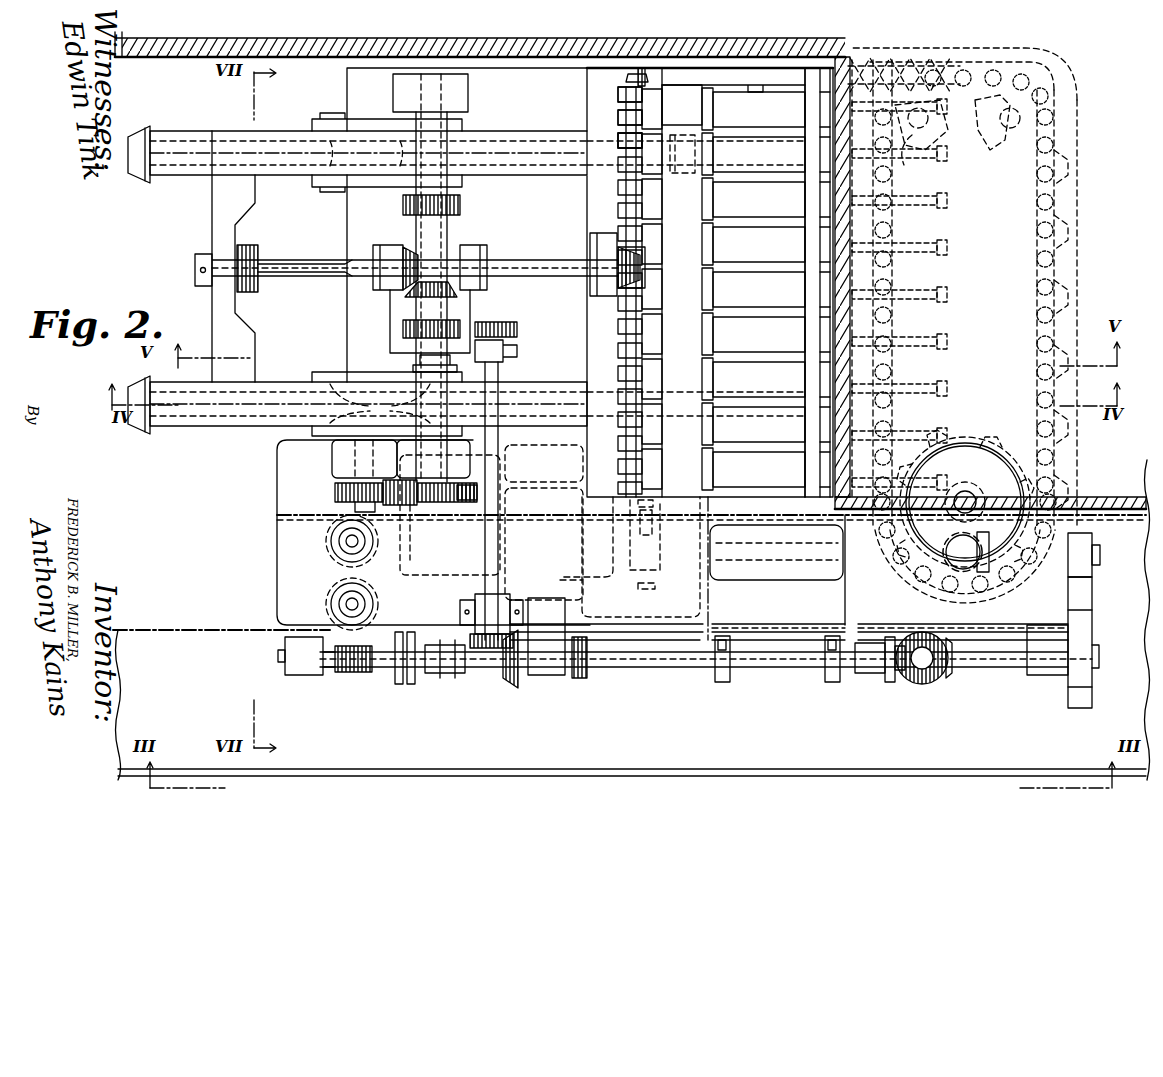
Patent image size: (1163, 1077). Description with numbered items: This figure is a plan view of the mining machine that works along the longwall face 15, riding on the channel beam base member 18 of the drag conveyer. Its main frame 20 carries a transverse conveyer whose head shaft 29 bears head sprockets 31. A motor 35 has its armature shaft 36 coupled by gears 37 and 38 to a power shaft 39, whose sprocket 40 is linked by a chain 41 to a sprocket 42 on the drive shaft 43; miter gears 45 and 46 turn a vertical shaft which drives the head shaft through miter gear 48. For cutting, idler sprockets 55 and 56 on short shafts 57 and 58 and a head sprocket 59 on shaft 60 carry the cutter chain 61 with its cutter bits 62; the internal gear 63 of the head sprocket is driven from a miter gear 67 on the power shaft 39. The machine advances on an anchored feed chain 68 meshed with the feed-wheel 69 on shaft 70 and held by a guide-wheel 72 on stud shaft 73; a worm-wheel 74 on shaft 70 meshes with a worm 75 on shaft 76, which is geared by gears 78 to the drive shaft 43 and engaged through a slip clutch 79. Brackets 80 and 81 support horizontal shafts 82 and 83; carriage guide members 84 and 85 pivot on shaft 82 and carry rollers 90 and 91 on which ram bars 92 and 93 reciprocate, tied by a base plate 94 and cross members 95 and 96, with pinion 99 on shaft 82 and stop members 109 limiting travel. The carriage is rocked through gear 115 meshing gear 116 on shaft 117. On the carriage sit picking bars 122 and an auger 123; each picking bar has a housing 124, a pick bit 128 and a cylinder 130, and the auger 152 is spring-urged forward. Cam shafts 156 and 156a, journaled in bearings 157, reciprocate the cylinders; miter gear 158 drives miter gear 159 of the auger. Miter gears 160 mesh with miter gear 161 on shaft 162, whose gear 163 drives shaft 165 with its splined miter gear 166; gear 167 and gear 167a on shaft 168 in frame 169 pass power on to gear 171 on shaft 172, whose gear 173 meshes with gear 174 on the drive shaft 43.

The longwall face 15 is at (1100, 505).
The channel beam base member 18 is at (195, 765).
The main frame 20 is at (277, 514).
The head shaft 29 is at (792, 663).
The head sprocket 31 is at (724, 684).
The motor 35 is at (594, 580).
The armature shaft 36 is at (632, 535).
The gear 37 is at (655, 505).
The gear 38 is at (652, 590).
The power shaft 39 is at (792, 558).
The sprocket 40 is at (1100, 555).
The chain 41 is at (1092, 596).
The sprocket 42 is at (1099, 663).
The drive shaft 43 is at (647, 667).
The miter gear 45 is at (950, 676).
The miter gear 46 is at (924, 684).
The miter gear 48 is at (897, 682).
The idler sprocket 55 is at (930, 120).
The idler sprocket 56 is at (990, 138).
The short shaft 57 is at (914, 148).
The short shaft 58 is at (1010, 128).
The head sprocket 59 is at (975, 440).
The shaft 60 is at (970, 495).
The cutter chain 61 is at (1040, 303).
The cutter bit 62 is at (1060, 273).
The internal gear 63 is at (922, 578).
The miter gear 67 is at (985, 555).
The feed chain 68 is at (758, 518).
The feed-wheel 69 is at (342, 590).
The shaft 70 is at (350, 602).
The guide-wheel 72 is at (337, 520).
The stud shaft 73 is at (350, 539).
The worm-wheel 74 is at (397, 673).
The worm 75 is at (350, 672).
The shaft 76 is at (282, 660).
The gears 78 is at (582, 678).
The slip clutch 79 is at (442, 675).
The supporting bracket 80 is at (400, 460).
The supporting bracket 81 is at (410, 88).
The horizontal shaft 82 is at (448, 238).
The horizontal shaft 83 is at (448, 222).
The carriage guide member 84 is at (332, 380).
The carriage guide member 85 is at (360, 120).
The roller 90 is at (380, 403).
The roller 91 is at (330, 142).
The ram bar 92 is at (190, 428).
The ram bar 93 is at (196, 133).
The base plate 94 is at (595, 220).
The cross member 95 is at (815, 266).
The cross member 96 is at (212, 210).
The pinion 99 is at (403, 207).
The stop member 109 is at (155, 120).
The gear 115 is at (460, 491).
The gear 116 is at (340, 490).
The shaft 117 is at (357, 470).
The picking bar 122 is at (742, 193).
The auger 123 is at (730, 73).
The housing 124 is at (684, 105).
The pick bit 128 is at (922, 288).
The cylinder 130 is at (618, 115).
The auger 152 is at (885, 70).
The cam shaft 156 is at (630, 358).
The cam shaft 156a is at (621, 172).
The bearing 157 is at (618, 93).
The miter gear 158 is at (634, 76).
The miter gear 159 is at (641, 68).
The miter gear 160 is at (642, 258).
The miter gear 161 is at (600, 280).
The shaft 162 is at (292, 258).
The gear 163 is at (254, 243).
The shaft 165 is at (348, 286).
The miter gear 166 is at (408, 248).
The gear 167 is at (412, 300).
The gear 167a is at (403, 329).
The shaft 168 is at (413, 362).
The frame 169 is at (448, 310).
The gear 171 is at (517, 330).
The shaft 172 is at (492, 460).
The gear 173 is at (467, 645).
The gear 174 is at (514, 678).